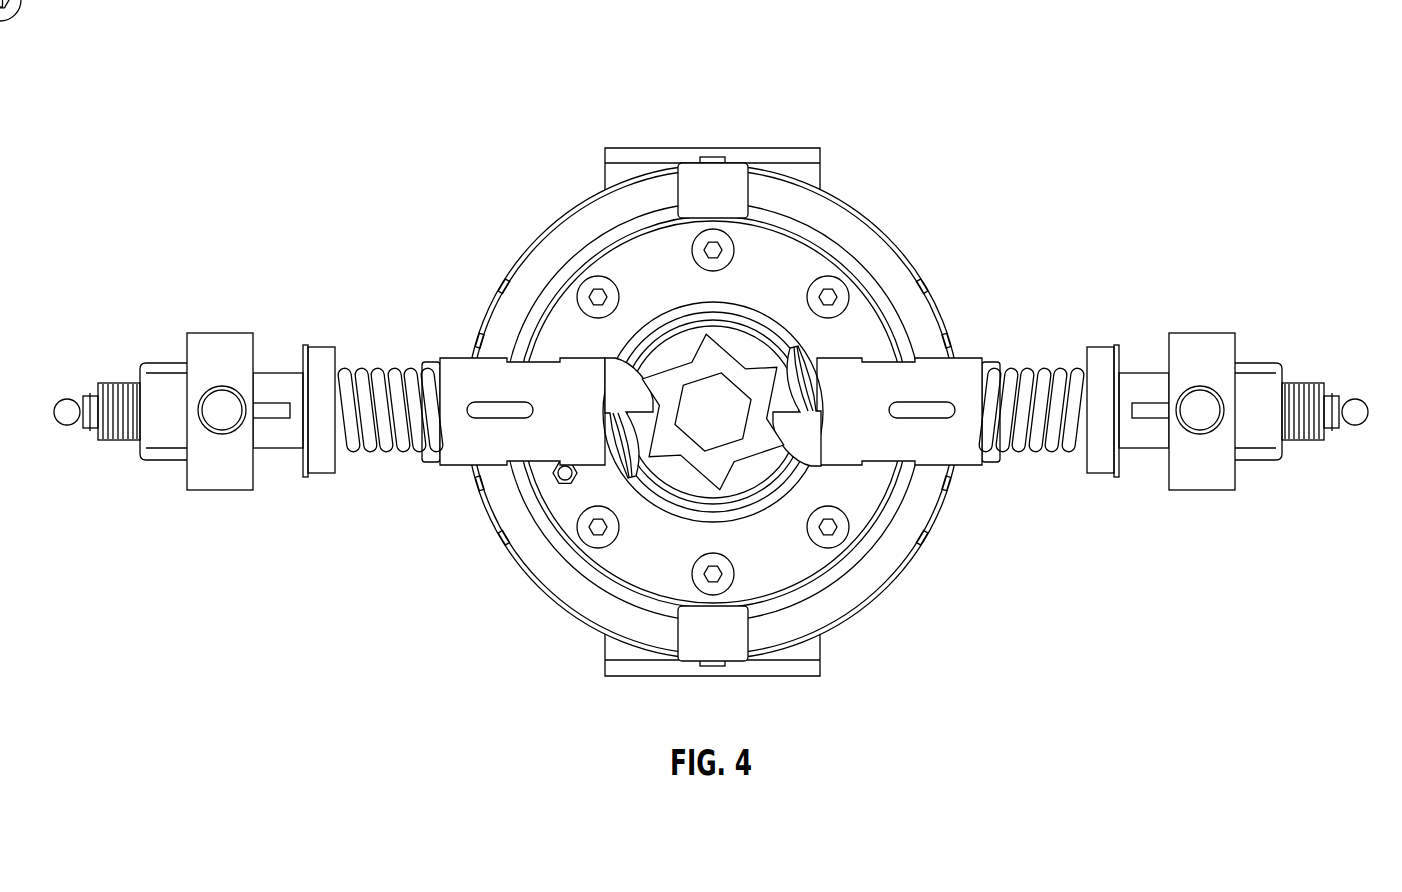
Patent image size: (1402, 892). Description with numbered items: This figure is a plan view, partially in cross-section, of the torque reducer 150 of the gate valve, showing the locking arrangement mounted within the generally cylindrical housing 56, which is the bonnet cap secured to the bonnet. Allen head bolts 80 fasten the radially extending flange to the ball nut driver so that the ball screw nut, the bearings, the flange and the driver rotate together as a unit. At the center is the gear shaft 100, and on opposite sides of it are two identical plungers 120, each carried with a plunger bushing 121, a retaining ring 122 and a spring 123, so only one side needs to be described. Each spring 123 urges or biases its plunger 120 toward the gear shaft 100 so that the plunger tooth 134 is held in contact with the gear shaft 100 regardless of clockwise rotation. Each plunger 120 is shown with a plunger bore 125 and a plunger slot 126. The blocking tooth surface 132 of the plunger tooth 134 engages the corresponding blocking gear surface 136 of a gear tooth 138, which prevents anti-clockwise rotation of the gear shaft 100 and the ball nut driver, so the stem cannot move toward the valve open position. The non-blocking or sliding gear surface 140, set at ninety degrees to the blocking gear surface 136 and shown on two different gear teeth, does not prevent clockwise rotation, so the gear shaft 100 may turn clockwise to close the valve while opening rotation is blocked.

The clamping assembly 150 is at (1082, 112).
The housing 56 is at (869, 600).
The Allen head bolts 80 is at (702, 250).
The gear shaft 100 is at (733, 462).
The plunger 120 is at (473, 447).
The plunger bushing 121 is at (208, 352).
The retaining ring 122 is at (325, 463).
The spring 123 is at (400, 447).
The pivot hole 125 is at (228, 417).
The slotted rod 126 is at (258, 410).
The blocking tooth surface 132 is at (777, 413).
The plunger tooth 134 is at (598, 360).
The blocking gear surface 136 is at (718, 352).
The gear tooth 138 is at (767, 360).
The sliding gear surface 140 is at (618, 360).